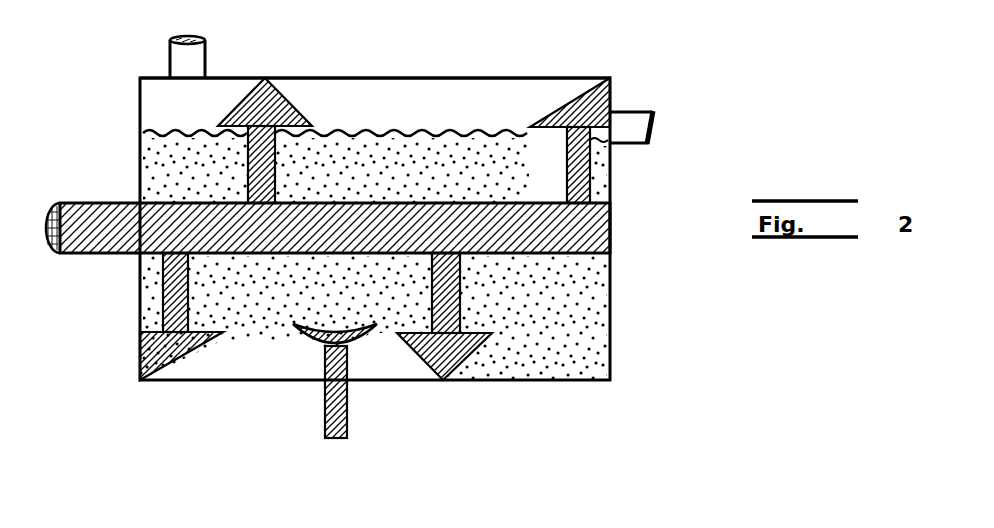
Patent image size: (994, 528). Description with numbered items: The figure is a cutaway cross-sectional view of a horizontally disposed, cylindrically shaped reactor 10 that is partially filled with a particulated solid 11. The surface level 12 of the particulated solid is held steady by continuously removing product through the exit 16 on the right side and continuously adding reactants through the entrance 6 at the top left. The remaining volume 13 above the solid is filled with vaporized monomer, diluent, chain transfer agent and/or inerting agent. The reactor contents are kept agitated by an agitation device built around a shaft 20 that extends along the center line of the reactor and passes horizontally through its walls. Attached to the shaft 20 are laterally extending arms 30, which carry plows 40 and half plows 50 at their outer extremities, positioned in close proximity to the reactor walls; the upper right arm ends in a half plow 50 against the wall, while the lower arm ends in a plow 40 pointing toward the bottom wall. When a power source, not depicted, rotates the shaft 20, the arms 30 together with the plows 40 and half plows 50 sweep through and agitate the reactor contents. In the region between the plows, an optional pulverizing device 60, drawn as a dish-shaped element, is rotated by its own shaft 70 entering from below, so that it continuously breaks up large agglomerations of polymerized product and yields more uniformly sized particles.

The entrance 6 is at (207, 52).
The reactor 10 is at (610, 350).
The particulated solid 11 is at (446, 168).
The surface level 12 is at (498, 127).
The remaining volume 13 is at (529, 95).
The exit 16 is at (661, 122).
The shaft 20 is at (91, 204).
The laterally extending arms 30 is at (590, 175).
The plows 40 is at (460, 358).
The half plows 50 is at (612, 97).
The pulverizing device 60 is at (307, 341).
The shaft 70 is at (325, 398).